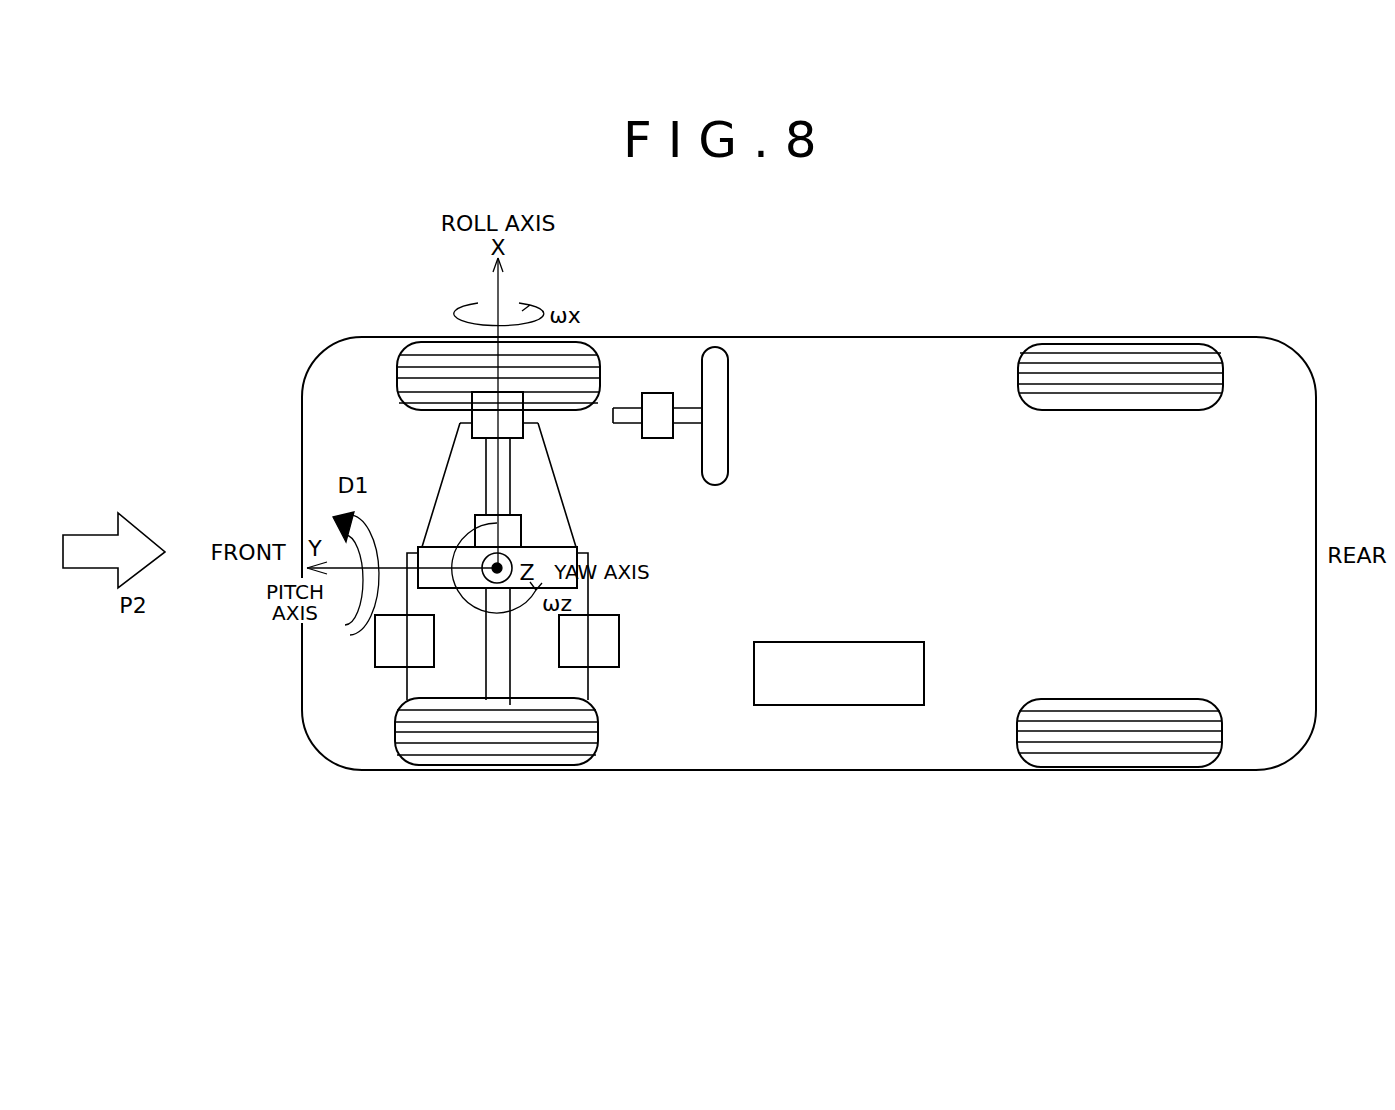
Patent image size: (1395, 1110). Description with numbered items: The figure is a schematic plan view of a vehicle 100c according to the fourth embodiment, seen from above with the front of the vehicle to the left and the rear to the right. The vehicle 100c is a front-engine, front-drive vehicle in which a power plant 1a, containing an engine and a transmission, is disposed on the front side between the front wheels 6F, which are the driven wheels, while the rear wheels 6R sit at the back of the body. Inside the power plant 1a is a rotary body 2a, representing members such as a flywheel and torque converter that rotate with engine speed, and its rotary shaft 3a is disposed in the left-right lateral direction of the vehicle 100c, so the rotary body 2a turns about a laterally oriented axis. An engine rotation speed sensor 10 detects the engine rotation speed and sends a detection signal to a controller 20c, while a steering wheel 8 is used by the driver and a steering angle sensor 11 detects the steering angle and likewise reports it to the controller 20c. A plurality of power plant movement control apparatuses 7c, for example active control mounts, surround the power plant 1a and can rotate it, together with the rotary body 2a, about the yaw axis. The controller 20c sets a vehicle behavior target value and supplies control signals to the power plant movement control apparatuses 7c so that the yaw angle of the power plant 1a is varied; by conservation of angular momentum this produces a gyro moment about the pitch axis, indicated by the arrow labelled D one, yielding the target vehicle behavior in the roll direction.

The vehicle 100c is at (763, 252).
The front wheels 6F is at (428, 342).
The rear wheels 6R is at (1118, 344).
The power plant movement control apparatus 7c is at (472, 415).
The power plant 1a is at (440, 490).
The rotary body 2a is at (430, 550).
The rotary shaft 3a is at (503, 652).
The engine rotation speed sensor 10 is at (513, 537).
The steering wheel 8 is at (718, 347).
The steering angle sensor 11 is at (660, 393).
The controller 20c is at (924, 672).